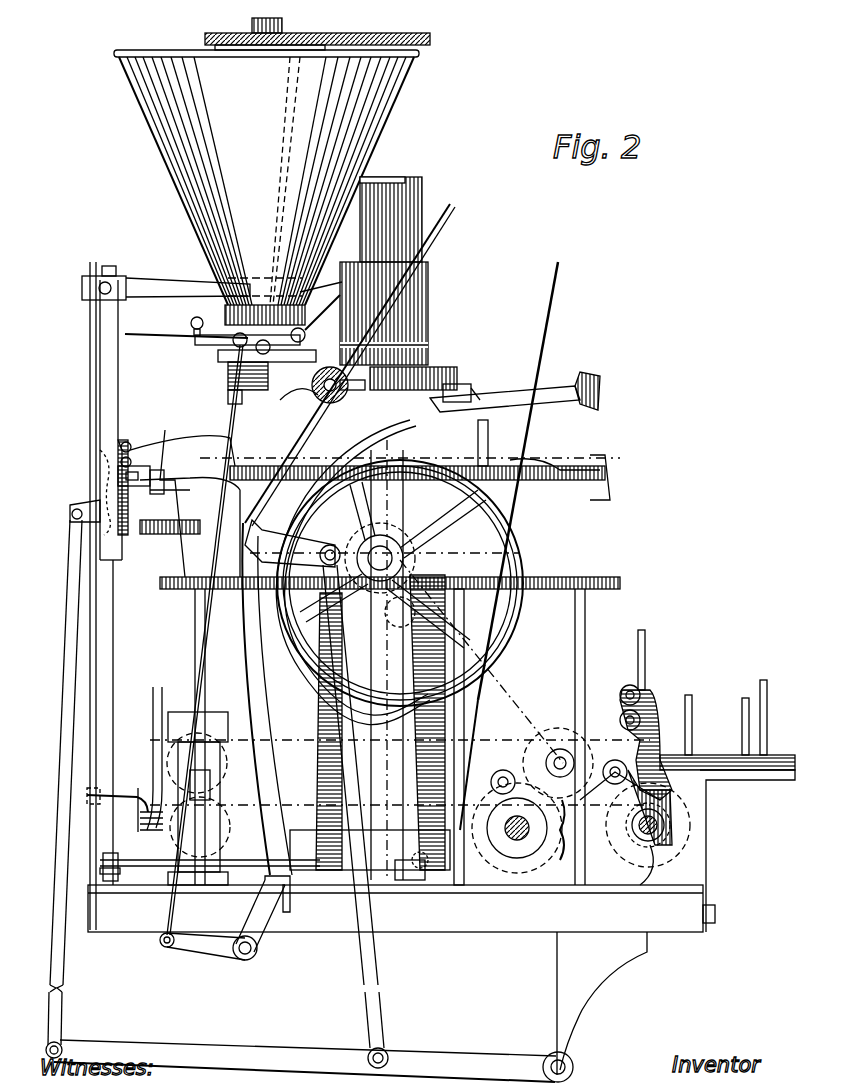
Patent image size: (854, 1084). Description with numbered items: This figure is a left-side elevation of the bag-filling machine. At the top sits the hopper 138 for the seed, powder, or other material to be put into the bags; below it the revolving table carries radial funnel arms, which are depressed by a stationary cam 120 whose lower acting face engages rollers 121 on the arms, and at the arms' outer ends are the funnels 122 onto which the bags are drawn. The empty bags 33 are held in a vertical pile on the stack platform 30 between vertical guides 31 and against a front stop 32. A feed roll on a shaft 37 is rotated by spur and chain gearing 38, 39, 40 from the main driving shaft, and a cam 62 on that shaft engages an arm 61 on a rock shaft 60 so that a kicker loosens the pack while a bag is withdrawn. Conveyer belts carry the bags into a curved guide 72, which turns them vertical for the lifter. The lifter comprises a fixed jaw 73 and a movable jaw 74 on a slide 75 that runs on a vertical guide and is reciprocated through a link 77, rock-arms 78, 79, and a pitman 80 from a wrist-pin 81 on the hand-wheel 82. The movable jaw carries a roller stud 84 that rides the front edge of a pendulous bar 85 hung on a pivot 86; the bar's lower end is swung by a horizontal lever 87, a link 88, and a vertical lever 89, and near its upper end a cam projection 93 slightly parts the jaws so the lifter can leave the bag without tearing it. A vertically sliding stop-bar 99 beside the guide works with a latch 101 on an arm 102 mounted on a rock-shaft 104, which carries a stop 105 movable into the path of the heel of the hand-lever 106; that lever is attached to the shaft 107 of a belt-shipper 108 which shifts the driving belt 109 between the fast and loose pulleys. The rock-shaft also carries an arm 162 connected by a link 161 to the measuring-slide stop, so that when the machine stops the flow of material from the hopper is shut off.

The hopper 138 is at (165, 140).
The stationary cam 120 is at (432, 372).
The rollers 121 is at (464, 386).
The funnels 122 is at (598, 390).
The driving belt 109 is at (549, 318).
The pivot 86 is at (105, 282).
The stop-bar 99 is at (90, 316).
The pendulous bar 85 is at (104, 359).
The cam projection 93 is at (120, 446).
The roller stud 84 is at (120, 463).
The movable jaw 74 is at (140, 462).
The slide 75 is at (85, 510).
The fixed jaw 73 is at (146, 492).
The link 77 is at (54, 952).
The link 161 is at (202, 612).
The vertical lever 89 is at (422, 770).
The stack platform 30 is at (742, 780).
The rock-arm 79 is at (482, 1060).
The rock-arm 78 is at (290, 1045).
The hand-wheel 82 is at (517, 618).
The wrist-pin 81 is at (330, 546).
The hand-lever 106 is at (266, 679).
The pitman 80 is at (378, 968).
The belt-shipper 108 is at (480, 710).
The spur and chain gearing 40 is at (505, 665).
The shaft 107 is at (450, 872).
The spur and chain gearing 39 is at (602, 870).
The spur and chain gearing 38 is at (622, 862).
The shaft 37 is at (662, 820).
The cam 62 is at (650, 845).
The rock shaft 60 is at (628, 720).
The arm 61 is at (628, 748).
The front stop 32 is at (646, 655).
The bags 33 is at (712, 756).
The vertical guides 31 is at (760, 684).
The curved guide 72 is at (153, 700).
The latch 101 is at (132, 792).
The link 88 is at (244, 858).
The horizontal lever 87 is at (100, 870).
The arm 102 is at (162, 940).
The arm 162 is at (200, 950).
The rock-shaft 104 is at (245, 960).
The stop 105 is at (278, 935).